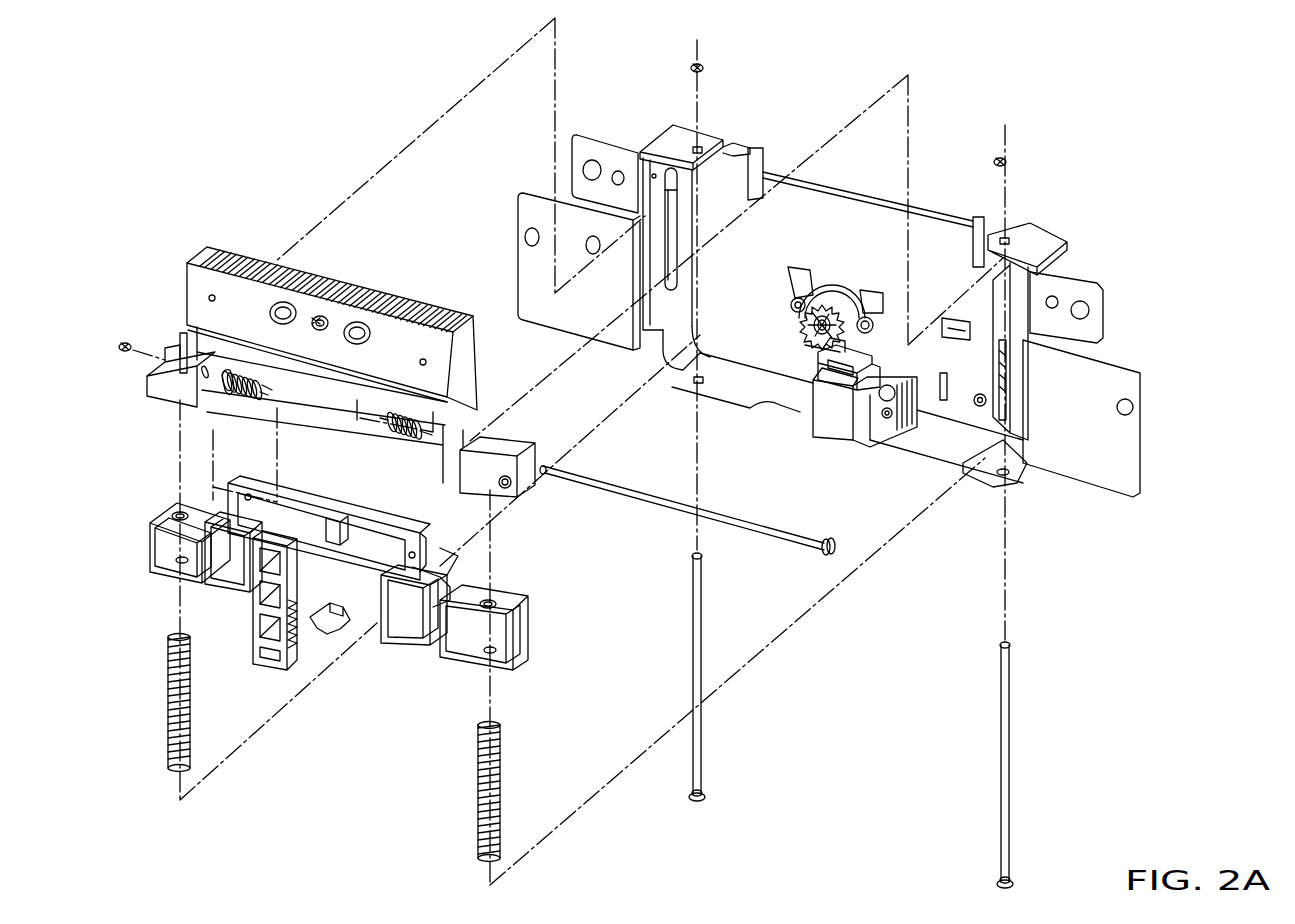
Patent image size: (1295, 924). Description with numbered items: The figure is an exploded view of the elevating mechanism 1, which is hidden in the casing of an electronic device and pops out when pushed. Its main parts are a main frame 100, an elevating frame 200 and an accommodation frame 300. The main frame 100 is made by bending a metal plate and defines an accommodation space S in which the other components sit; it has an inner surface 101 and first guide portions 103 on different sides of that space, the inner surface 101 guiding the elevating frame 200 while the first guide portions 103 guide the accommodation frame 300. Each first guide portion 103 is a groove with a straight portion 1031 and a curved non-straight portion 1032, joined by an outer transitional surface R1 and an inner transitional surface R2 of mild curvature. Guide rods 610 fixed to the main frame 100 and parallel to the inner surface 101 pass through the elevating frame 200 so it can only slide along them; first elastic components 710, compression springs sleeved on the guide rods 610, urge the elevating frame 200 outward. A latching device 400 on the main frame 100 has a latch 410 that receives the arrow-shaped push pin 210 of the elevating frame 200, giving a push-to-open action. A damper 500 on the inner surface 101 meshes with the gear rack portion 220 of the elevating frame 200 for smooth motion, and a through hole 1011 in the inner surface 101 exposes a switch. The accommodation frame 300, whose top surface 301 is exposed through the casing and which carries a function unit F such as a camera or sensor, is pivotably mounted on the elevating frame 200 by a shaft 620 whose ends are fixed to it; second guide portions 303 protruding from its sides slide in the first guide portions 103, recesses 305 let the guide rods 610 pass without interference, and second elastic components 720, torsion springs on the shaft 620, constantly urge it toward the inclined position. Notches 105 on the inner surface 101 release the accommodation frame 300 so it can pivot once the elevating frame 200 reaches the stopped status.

The elevating mechanism 1 is at (285, 115).
The main frame 100 is at (517, 270).
The inner surface 101 is at (887, 232).
The through hole 1011 is at (1003, 317).
The first guide portion 103 is at (862, 80).
The straight portion 1031 is at (705, 245).
The non-straight portion 1032 is at (737, 145).
The notch 105 is at (980, 212).
The elevating frame 200 is at (505, 635).
The push pin 210 is at (343, 617).
The gear rack portion 220 is at (297, 636).
The accommodation frame 300 is at (187, 287).
The top surface 301 is at (234, 246).
The second guide portion 303 is at (145, 373).
The recess 305 is at (178, 360).
The latching device 400 is at (863, 443).
The latch 410 is at (850, 368).
The damper 500 is at (808, 340).
The guide rod 610 is at (700, 745).
The shaft 620 is at (650, 515).
The first elastic component 710 is at (168, 707).
The second elastic component 720 is at (235, 398).
The function unit F is at (318, 320).
The accommodation space S is at (718, 319).
The outer transitional surface R1 is at (664, 172).
The inner transitional surface R2 is at (683, 243).